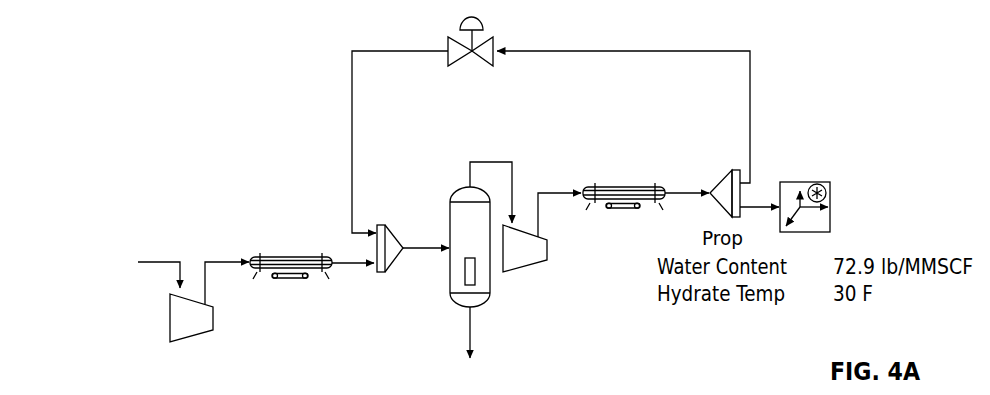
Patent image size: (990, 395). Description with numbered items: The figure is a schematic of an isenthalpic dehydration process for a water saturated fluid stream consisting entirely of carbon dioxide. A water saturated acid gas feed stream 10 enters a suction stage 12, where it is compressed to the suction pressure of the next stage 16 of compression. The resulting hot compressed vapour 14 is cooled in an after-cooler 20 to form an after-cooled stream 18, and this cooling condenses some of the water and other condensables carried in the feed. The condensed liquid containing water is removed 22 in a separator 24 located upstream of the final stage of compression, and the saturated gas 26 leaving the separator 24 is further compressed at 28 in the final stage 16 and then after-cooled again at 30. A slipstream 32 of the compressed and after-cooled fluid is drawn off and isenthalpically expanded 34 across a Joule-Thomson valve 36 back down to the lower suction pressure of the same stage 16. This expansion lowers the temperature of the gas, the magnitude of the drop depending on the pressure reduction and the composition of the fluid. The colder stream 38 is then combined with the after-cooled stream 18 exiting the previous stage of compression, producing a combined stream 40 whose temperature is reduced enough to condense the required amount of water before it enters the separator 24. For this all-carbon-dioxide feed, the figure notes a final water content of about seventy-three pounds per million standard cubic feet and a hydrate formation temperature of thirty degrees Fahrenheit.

The water saturated acid gas feed stream 10 is at (160, 261).
The suction stage 12 is at (192, 337).
The hot compressed vapour 14 is at (222, 260).
The next stage of compression 16 is at (525, 272).
The after-cooled stream 18 is at (340, 267).
The after-cooler 20 is at (290, 256).
The condensed liquid removal 22 is at (473, 330).
The separator 24 is at (457, 189).
The saturated gas 26 is at (490, 161).
The further compressed stream 28 is at (553, 190).
The second after-cooler 30 is at (680, 190).
The slipstream 32 is at (682, 50).
The isenthalpic expansion 34 is at (350, 58).
The Joule-Thomson valve 36 is at (495, 42).
The colder stream 38 is at (347, 140).
The combined stream 40 is at (420, 252).